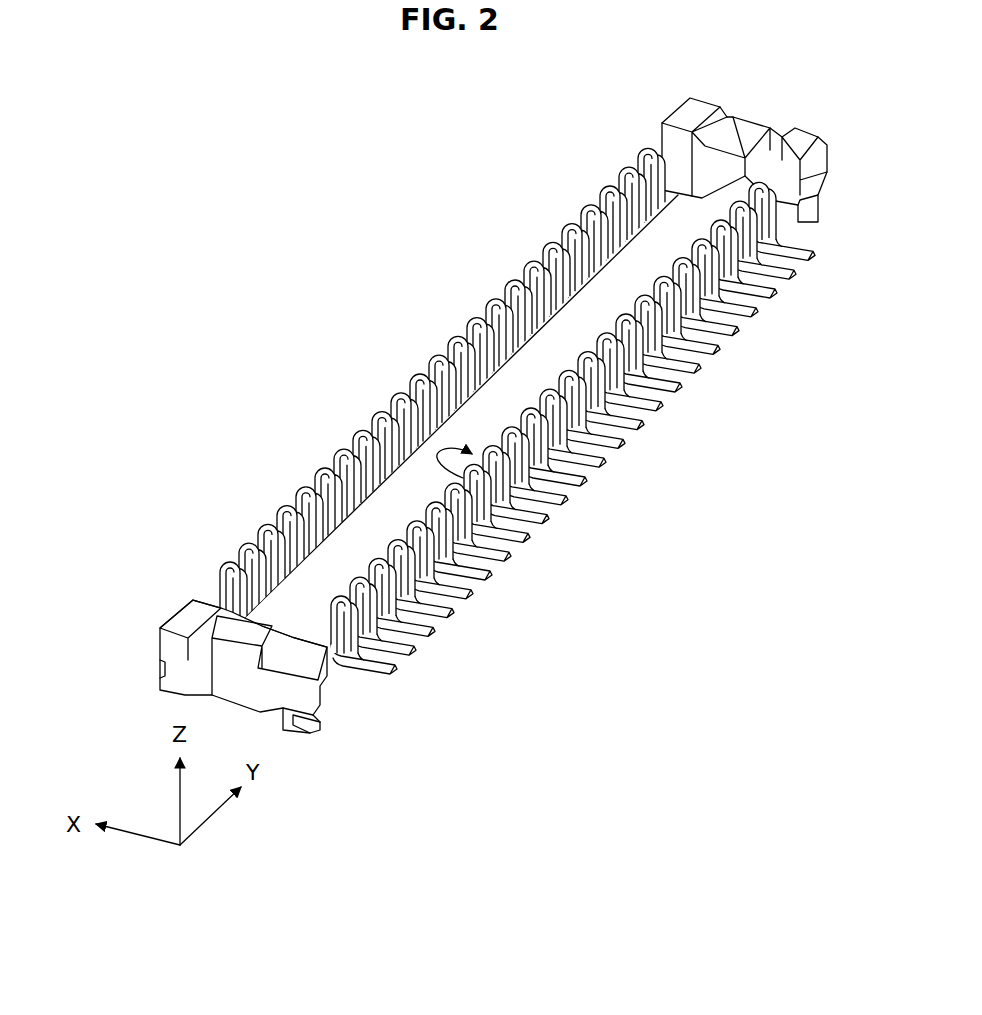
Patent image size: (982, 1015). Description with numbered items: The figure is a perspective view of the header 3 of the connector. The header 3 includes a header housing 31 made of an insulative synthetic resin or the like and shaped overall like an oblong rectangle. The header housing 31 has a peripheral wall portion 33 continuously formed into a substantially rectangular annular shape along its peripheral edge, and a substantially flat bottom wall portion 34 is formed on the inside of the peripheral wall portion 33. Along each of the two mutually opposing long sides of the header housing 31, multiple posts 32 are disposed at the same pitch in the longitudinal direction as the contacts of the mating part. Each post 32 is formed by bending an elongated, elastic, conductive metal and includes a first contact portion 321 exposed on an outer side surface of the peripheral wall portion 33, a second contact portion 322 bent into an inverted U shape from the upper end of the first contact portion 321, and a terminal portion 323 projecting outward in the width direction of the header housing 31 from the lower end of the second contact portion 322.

The header 3 is at (768, 368).
The header housing 31 is at (180, 623).
The post 32 is at (377, 405).
The first contact portion 321 is at (505, 474).
The second contact portion 322 is at (490, 505).
The terminal portion 323 is at (548, 521).
The peripheral wall portion 33 is at (390, 680).
The bottom wall portion 34 is at (782, 288).